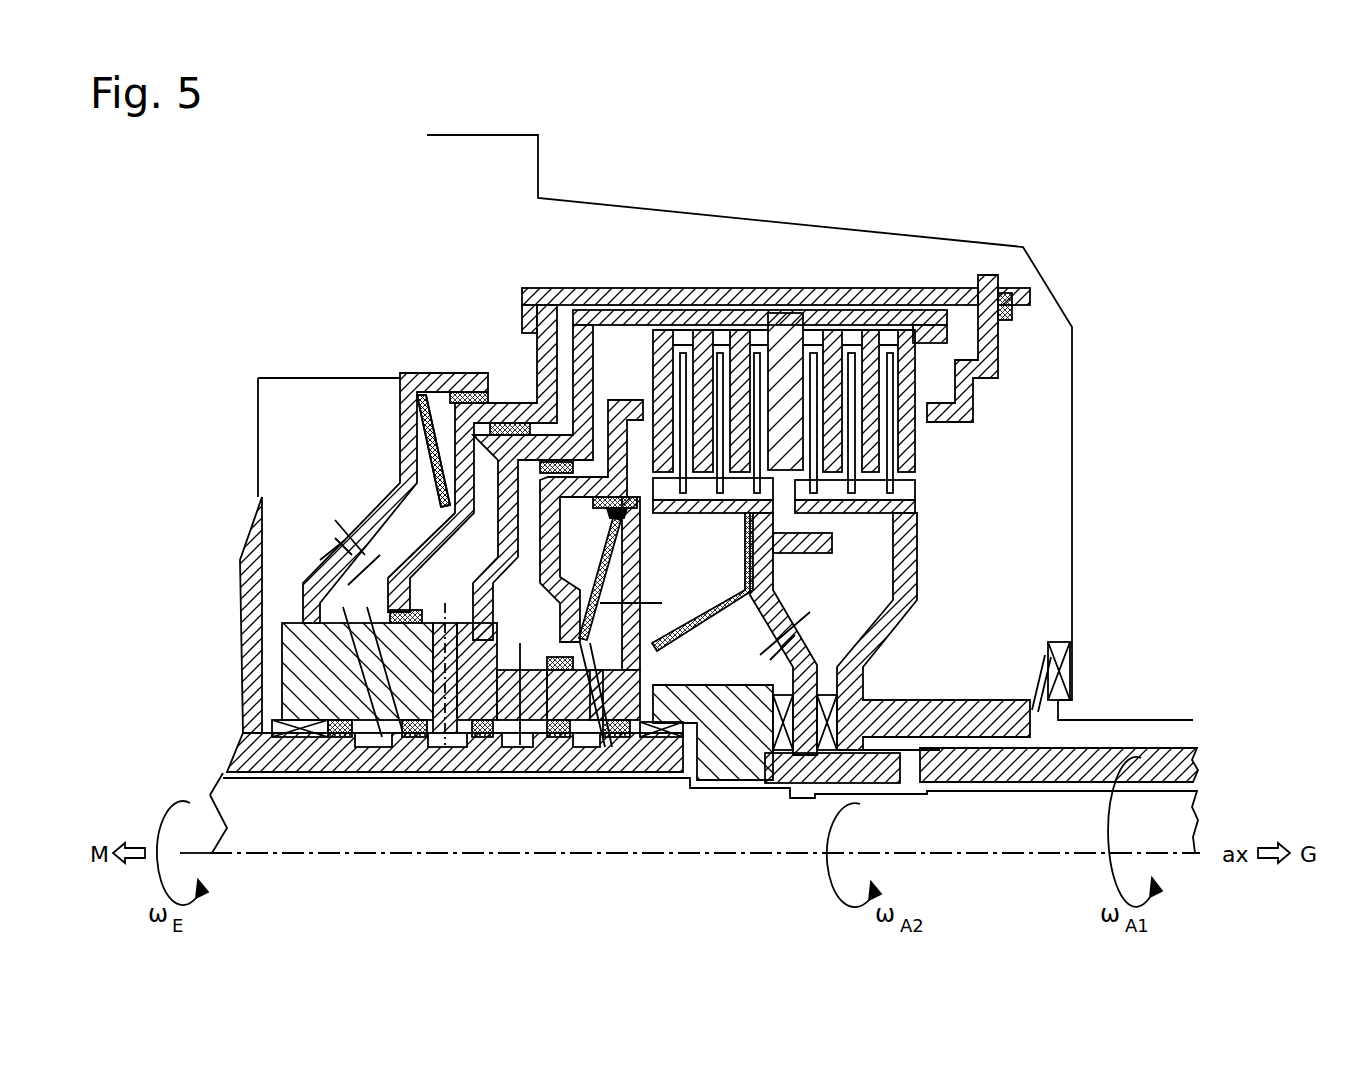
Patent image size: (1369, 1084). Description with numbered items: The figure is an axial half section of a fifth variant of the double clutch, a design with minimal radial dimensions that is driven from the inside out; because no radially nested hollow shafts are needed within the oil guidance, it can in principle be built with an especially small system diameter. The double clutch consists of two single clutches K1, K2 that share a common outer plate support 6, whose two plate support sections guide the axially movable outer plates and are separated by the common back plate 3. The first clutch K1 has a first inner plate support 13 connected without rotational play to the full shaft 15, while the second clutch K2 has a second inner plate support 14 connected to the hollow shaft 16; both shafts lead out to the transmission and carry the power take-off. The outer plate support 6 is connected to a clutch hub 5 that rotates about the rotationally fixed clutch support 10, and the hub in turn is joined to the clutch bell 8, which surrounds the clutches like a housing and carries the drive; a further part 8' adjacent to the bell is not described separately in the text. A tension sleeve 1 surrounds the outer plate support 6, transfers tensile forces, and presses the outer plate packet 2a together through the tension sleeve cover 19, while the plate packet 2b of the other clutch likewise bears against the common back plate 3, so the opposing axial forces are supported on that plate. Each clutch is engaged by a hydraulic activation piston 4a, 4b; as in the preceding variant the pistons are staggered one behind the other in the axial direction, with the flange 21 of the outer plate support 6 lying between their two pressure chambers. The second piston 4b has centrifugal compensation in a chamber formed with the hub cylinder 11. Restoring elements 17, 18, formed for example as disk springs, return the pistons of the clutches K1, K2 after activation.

The tension sleeve 1 is at (760, 293).
The outer plate packet 2a is at (910, 452).
The plate packet 2b is at (723, 380).
The common back plate 3 is at (783, 400).
The activation piston 4a is at (410, 390).
The second activation piston 4b is at (578, 358).
The clutch hub 5 is at (317, 688).
The common outer plate support 6 is at (610, 333).
The clutch bell 8 is at (433, 451).
The return spring 8' is at (303, 442).
The clutch support 10 is at (262, 752).
The hub cylinder 11 is at (632, 550).
The first inner plate support 13 is at (870, 640).
The second inner plate support 14 is at (770, 593).
The full shaft 15 is at (972, 843).
The hollow shaft 16 is at (1100, 763).
The restoring element 17 is at (405, 470).
The restoring element 18 is at (635, 588).
The tension sleeve cover 19 is at (990, 368).
The flange of the outer plate support 21 is at (553, 330).
The first clutch K1 is at (893, 373).
The second clutch K2 is at (680, 383).